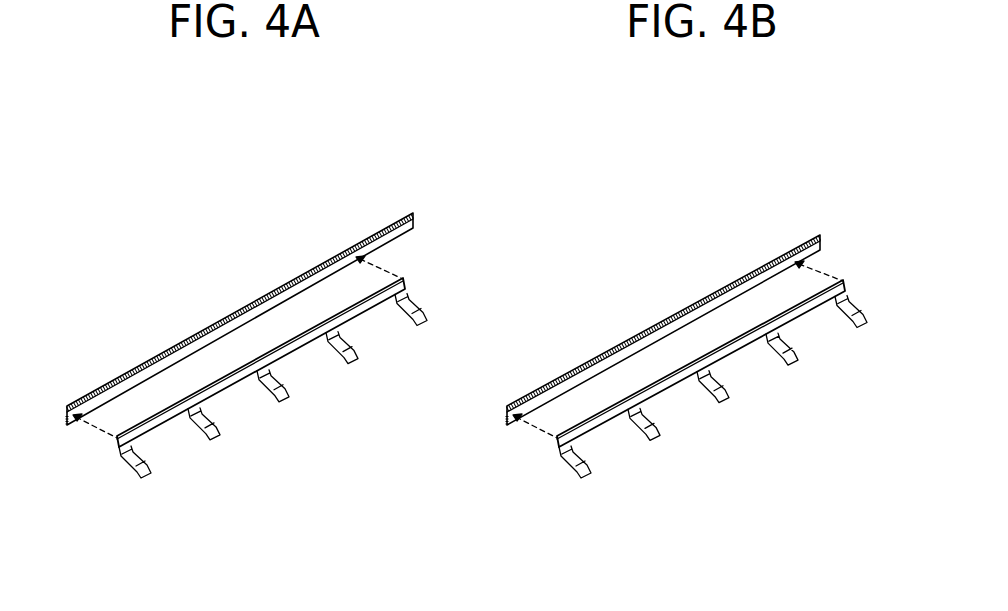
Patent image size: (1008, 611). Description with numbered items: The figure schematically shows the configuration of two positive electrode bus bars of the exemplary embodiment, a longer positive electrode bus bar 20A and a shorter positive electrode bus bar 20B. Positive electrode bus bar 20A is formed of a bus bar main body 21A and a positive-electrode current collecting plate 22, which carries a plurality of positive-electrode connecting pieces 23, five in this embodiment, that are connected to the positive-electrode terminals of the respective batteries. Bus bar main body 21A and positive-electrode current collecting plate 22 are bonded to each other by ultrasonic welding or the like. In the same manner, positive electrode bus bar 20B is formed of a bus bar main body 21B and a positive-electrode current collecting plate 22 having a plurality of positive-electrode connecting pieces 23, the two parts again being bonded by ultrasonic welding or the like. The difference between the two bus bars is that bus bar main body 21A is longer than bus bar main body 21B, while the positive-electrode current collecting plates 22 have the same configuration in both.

In FIG. 4A, the longer positive electrode bus bar 20A is at (369, 185).
In FIG. 4B, the shorter positive electrode bus bar 20B is at (806, 185).
In FIG. 4A, the bus bar main body 21A is at (270, 291).
In FIG. 4B, the bus bar main body 21B is at (710, 293).
In FIG. 4A, the positive-electrode current collecting plate 22 is at (377, 311).
In FIG. 4B, the positive-electrode current collecting plate 22 is at (817, 312).
In FIG. 4A, the positive-electrode connecting piece 23 is at (222, 441).
In FIG. 4B, the positive-electrode connecting piece 23 is at (662, 441).